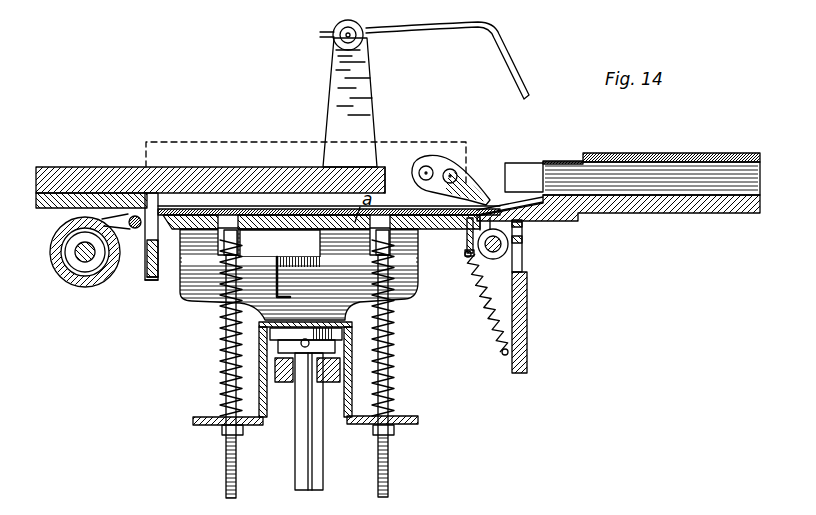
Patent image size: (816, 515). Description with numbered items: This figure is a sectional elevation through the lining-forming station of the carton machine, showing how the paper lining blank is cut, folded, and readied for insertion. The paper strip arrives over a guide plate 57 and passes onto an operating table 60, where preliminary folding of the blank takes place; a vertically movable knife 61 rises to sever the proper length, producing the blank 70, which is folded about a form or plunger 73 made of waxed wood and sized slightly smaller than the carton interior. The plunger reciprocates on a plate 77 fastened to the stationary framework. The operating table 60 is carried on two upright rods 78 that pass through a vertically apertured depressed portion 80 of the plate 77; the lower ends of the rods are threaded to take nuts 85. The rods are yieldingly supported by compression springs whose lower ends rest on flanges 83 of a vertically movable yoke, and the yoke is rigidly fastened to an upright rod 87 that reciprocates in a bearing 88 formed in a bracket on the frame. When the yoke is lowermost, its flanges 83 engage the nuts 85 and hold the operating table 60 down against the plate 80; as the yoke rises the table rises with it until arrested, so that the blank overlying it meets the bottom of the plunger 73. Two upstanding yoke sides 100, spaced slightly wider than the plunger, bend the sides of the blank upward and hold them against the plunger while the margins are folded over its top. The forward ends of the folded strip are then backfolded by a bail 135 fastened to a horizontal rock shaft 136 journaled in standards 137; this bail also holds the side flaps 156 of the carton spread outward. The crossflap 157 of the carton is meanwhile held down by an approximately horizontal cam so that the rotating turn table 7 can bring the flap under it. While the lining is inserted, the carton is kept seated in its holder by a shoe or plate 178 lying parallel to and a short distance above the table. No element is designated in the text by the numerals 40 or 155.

The turn table 7 is at (647, 213).
The roller 40 is at (85, 287).
The guide plate 57 is at (124, 224).
The operating table 60 is at (166, 232).
The knife 61 is at (145, 275).
The blank 70 is at (456, 160).
The form or plunger 73 is at (380, 172).
The plate 77 is at (55, 203).
The upright rods 78 is at (226, 487).
The depressed portion of plate 80 is at (437, 222).
The flanges 83 is at (212, 420).
The nuts 85 is at (222, 432).
The rod 87 is at (298, 474).
The bearing 88 is at (285, 395).
The yoke sides or plates 100 is at (194, 293).
The bail 135 is at (492, 31).
The rock shaft 136 is at (343, 40).
The standards 137 is at (337, 78).
The gauge strip 155 is at (565, 160).
The side flaps 156 is at (520, 170).
The crossflap 157 is at (530, 220).
The shoe or plate 178 is at (655, 157).